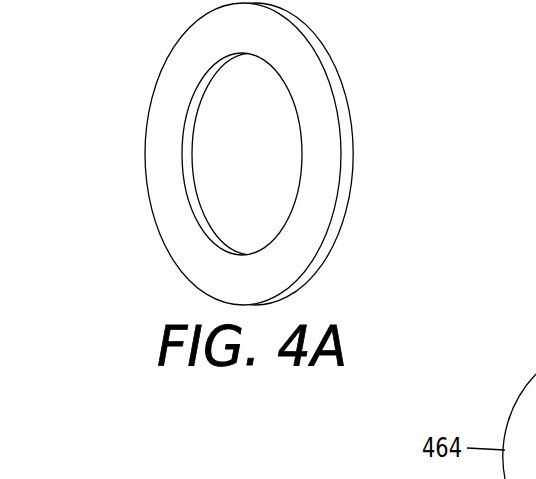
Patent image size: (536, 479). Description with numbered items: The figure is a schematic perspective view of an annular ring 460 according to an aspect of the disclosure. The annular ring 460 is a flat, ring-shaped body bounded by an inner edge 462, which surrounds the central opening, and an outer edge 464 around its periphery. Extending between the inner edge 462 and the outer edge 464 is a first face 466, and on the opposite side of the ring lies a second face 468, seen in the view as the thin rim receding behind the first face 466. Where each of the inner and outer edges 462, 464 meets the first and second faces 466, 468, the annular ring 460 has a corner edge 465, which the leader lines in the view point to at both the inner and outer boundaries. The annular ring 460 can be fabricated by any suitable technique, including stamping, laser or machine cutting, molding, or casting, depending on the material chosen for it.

The annular ring 460 is at (128, 42).
The inner edge 462 is at (194, 174).
The outer edge 464 is at (342, 158).
The corner edge 465 is at (184, 127).
The first face 466 is at (172, 218).
The second face 468 is at (340, 227).